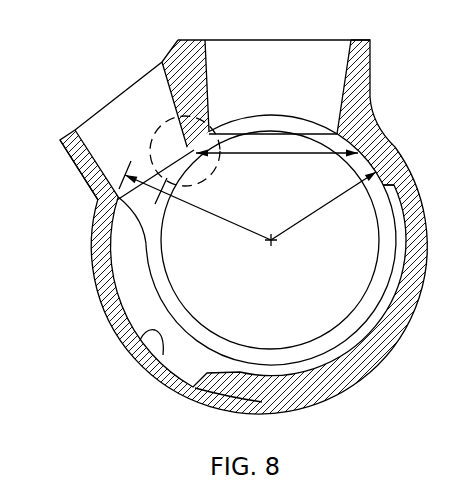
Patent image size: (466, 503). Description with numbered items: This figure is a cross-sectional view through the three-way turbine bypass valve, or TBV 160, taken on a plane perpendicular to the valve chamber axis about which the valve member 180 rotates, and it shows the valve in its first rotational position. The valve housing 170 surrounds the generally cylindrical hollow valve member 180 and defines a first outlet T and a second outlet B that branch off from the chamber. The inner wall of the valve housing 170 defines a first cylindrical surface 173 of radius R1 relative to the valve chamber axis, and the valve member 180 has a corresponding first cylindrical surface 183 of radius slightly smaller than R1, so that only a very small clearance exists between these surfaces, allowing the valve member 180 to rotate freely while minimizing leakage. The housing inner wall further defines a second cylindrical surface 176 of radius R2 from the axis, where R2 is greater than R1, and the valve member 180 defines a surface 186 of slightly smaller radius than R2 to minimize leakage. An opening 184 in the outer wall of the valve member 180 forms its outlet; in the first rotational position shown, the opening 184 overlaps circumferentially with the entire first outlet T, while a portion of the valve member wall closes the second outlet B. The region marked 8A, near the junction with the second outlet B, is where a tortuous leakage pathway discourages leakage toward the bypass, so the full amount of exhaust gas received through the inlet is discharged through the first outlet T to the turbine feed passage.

The TBV 160 is at (158, 382).
The valve housing 170 is at (98, 291).
The first cylindrical surface 173 is at (338, 140).
The second cylindrical surface 176 is at (143, 350).
The valve member 180 is at (200, 328).
The first cylindrical surface 183 is at (195, 122).
The opening 184 is at (283, 152).
The surface 186 is at (97, 200).
The second outlet B is at (143, 92).
The first outlet T is at (311, 53).
The detail region 8A is at (221, 166).
The radius R1 is at (320, 209).
The radius R2 is at (195, 201).